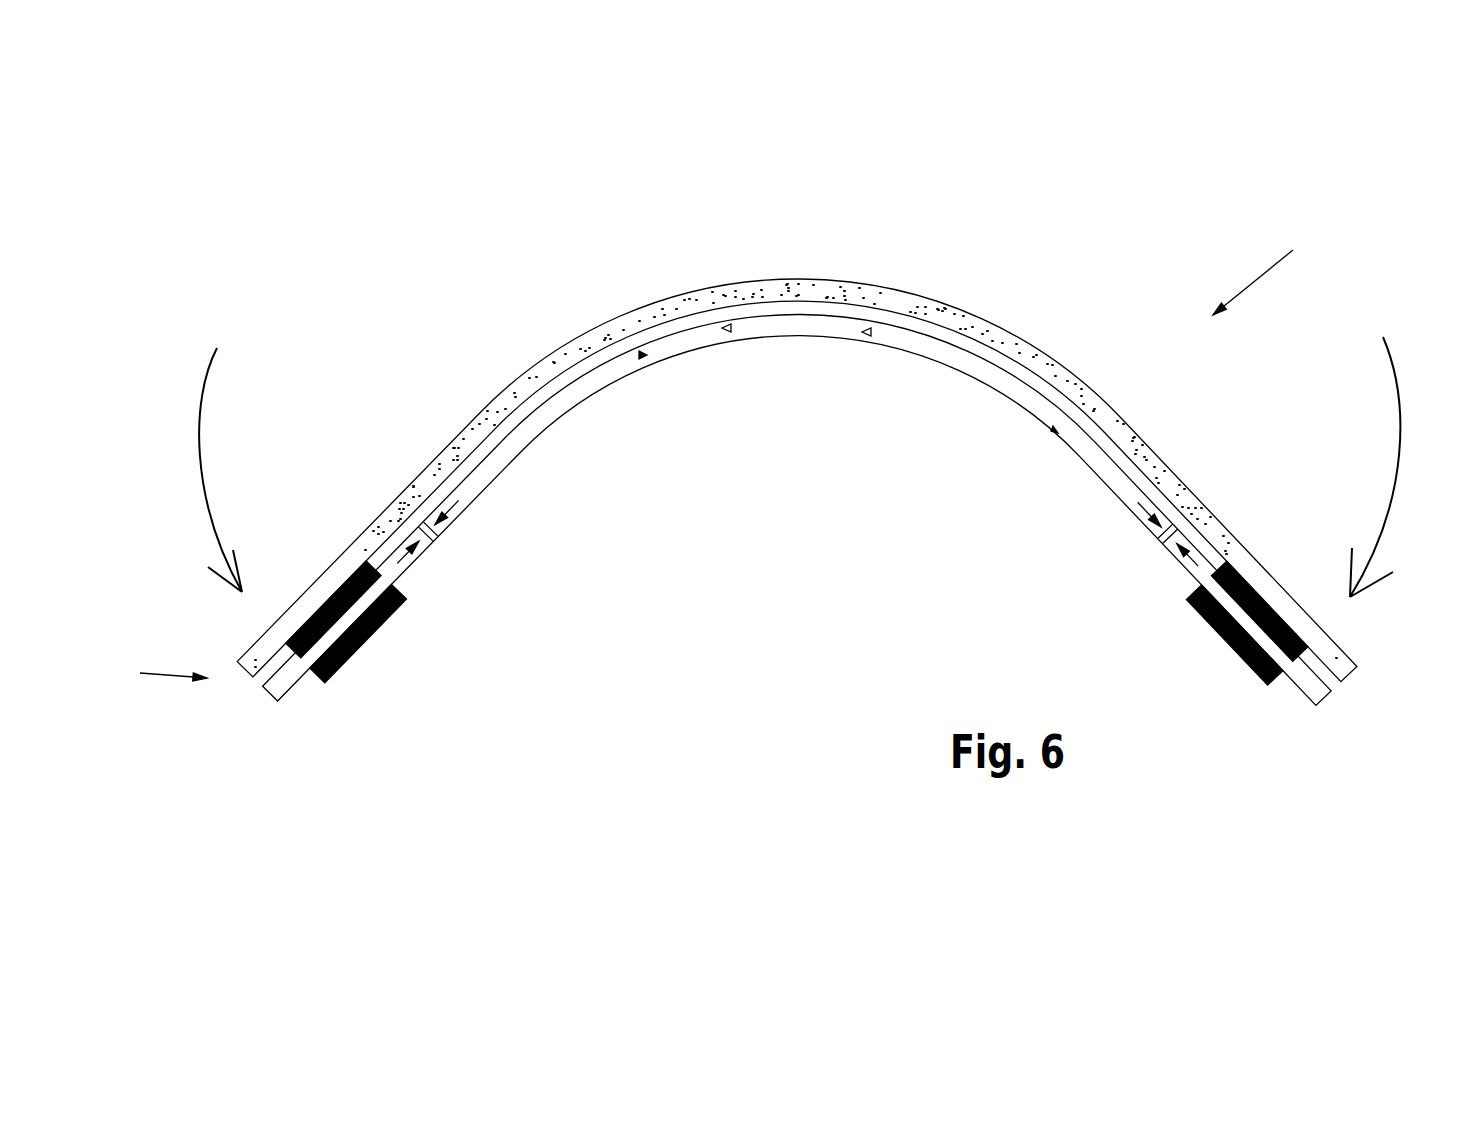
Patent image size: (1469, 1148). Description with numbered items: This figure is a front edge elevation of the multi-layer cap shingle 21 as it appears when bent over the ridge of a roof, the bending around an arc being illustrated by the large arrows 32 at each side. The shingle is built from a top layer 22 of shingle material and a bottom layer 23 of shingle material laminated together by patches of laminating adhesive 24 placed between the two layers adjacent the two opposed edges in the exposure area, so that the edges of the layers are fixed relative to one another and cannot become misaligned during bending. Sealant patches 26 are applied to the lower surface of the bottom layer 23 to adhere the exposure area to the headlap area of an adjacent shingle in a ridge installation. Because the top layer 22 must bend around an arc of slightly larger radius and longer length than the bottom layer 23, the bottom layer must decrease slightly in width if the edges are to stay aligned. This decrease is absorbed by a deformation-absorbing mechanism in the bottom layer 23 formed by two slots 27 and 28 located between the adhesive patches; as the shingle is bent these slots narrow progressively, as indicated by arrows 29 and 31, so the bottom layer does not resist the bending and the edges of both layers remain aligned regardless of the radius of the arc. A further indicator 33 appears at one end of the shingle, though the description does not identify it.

The multi-layer cap shingle 21 is at (1269, 271).
The top layer 22 is at (1185, 477).
The bottom layer 23 is at (920, 345).
The laminating adhesive 24 is at (313, 615).
The sealant patches 26 is at (375, 615).
The slot 27 is at (1165, 537).
The slot 28 is at (431, 535).
The arrows 29 is at (1138, 502).
The arrows 31 is at (397, 563).
The arrows 32 is at (198, 458).
The end of actuator 33 is at (153, 672).